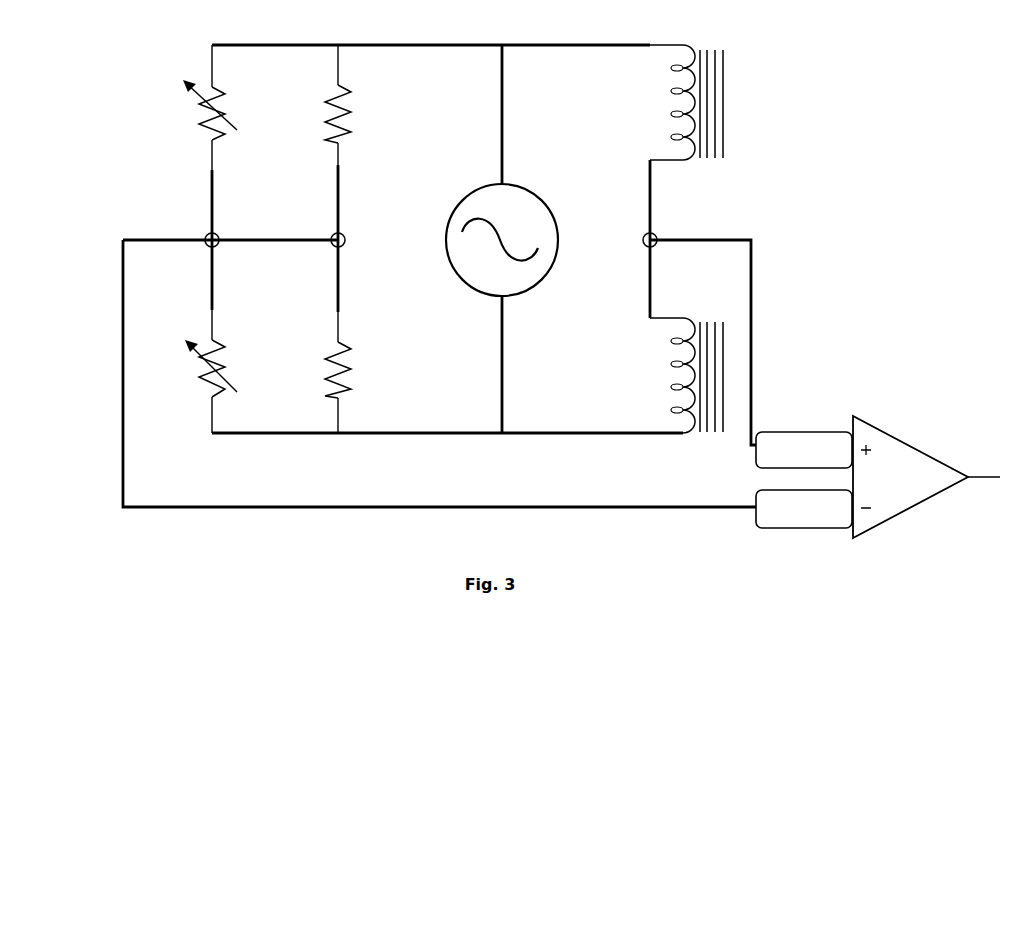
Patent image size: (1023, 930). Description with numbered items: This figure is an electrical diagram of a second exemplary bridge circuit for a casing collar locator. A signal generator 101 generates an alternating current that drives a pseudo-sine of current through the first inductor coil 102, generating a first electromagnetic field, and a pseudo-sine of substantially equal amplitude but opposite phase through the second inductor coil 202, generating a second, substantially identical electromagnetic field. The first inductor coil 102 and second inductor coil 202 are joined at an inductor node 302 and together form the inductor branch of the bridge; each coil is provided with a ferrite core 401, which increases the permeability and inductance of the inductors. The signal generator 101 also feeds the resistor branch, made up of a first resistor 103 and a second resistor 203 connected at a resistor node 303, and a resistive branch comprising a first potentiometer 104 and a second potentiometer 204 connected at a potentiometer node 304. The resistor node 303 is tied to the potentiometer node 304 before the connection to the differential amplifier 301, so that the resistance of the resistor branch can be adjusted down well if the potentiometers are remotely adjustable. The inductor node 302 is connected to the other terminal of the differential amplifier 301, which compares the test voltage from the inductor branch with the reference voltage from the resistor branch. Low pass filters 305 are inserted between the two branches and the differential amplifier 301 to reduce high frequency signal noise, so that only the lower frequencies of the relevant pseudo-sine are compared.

The signal generator 101 is at (502, 240).
The first inductor coil 102 is at (658, 102).
The first resistor 103 is at (356, 113).
The first potentiometer 104 is at (196, 110).
The second inductor coil 202 is at (660, 375).
The second resistor 203 is at (358, 370).
The second potentiometer 204 is at (194, 368).
The differential amplifier 301 is at (926, 477).
The inductor node 302 is at (630, 240).
The resistor node 303 is at (354, 235).
The potentiometer node 304 is at (228, 226).
The low pass filters 305 is at (804, 480).
The ferrite cores 401 is at (712, 241).